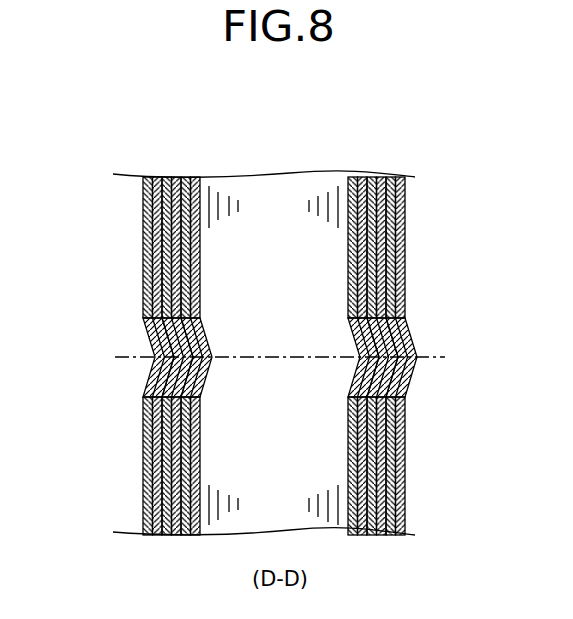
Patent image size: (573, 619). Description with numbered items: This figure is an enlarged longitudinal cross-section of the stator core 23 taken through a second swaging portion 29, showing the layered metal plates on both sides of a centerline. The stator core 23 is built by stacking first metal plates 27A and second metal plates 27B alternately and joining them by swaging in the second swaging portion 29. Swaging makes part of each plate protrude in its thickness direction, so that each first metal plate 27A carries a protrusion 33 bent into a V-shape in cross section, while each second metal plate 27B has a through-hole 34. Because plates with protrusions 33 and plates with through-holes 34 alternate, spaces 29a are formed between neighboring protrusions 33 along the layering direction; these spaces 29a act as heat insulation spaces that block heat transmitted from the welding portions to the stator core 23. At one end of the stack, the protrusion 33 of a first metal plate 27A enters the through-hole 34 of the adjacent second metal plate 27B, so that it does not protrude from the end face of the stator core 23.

The stator core 23 is at (238, 353).
The first metal plate 27A is at (352, 175).
The second metal plate 27B is at (363, 175).
The second swaging portion 29 is at (398, 305).
The space 29a is at (203, 366).
The protrusion 33 is at (197, 345).
The through-hole 34 is at (197, 318).